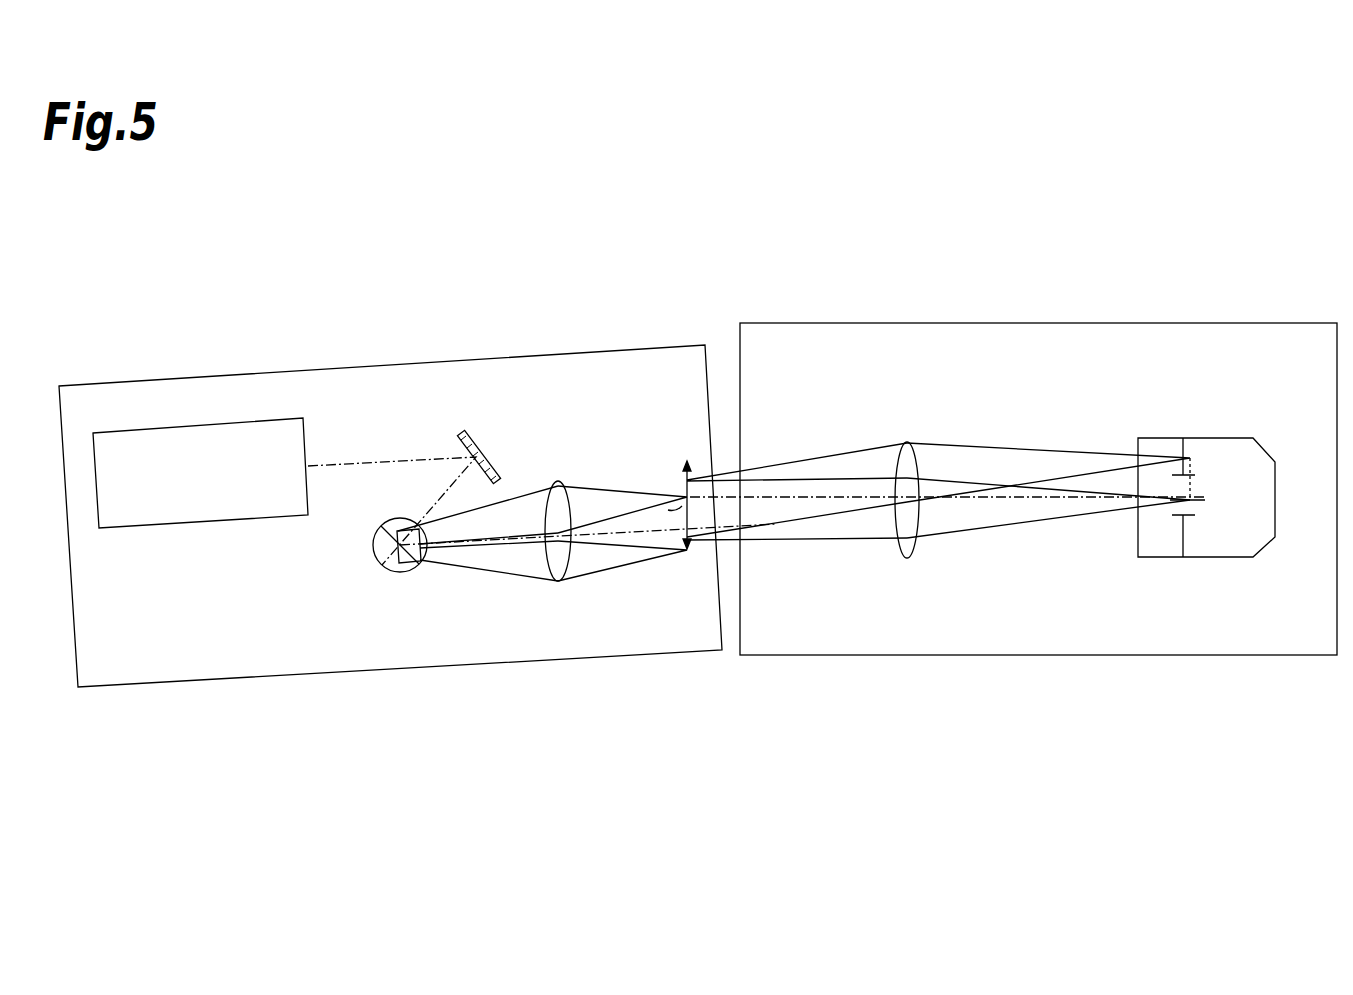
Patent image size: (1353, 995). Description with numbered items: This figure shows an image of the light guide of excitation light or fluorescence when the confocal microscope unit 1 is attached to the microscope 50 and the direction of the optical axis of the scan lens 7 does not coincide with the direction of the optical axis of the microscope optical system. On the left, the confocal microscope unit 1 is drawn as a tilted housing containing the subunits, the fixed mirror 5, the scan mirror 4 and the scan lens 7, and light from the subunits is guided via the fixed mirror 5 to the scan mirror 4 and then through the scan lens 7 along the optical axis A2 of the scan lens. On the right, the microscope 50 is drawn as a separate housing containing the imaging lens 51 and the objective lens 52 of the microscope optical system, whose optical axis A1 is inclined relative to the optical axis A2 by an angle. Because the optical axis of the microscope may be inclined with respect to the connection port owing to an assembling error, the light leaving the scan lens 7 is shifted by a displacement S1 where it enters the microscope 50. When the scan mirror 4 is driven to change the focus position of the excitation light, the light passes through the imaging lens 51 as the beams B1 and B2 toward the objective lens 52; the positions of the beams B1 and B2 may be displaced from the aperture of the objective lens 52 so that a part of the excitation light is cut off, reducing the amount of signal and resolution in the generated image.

The confocal microscope unit 1 is at (657, 314).
The fixed mirror 5 is at (474, 445).
The scan mirror 4 is at (400, 573).
The scan lens 7 is at (562, 582).
The optical axis of the scan lens A2 is at (619, 520).
The displacement S1 is at (690, 505).
The microscope 50 is at (1100, 323).
The optical axis of the microscope optical system A1 is at (812, 495).
The imaging lens 51 is at (907, 558).
The beam B1 is at (1035, 465).
The beam B2 is at (1030, 516).
The objective lens 52 is at (1277, 497).